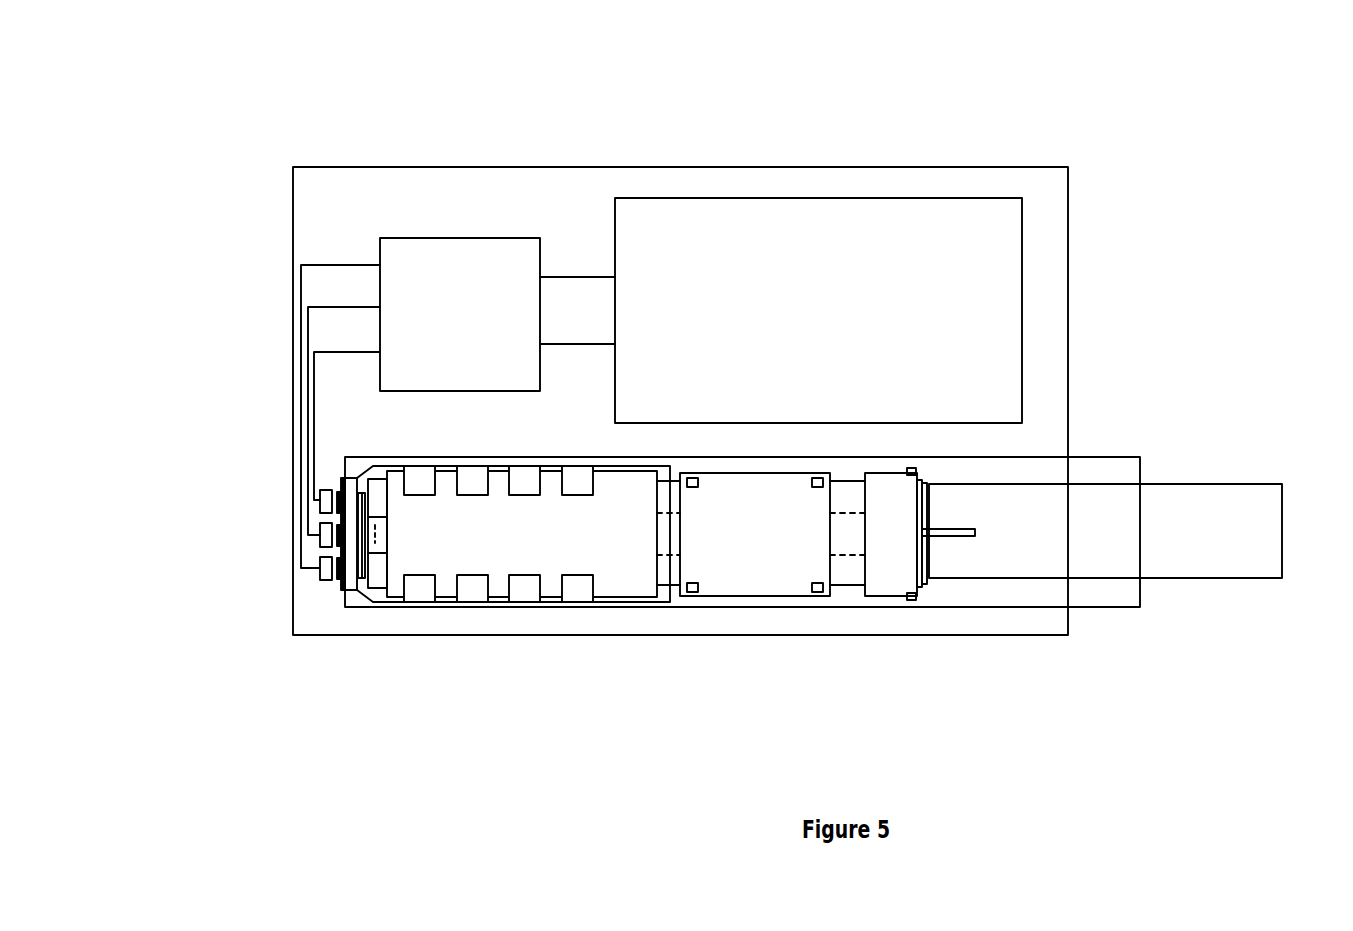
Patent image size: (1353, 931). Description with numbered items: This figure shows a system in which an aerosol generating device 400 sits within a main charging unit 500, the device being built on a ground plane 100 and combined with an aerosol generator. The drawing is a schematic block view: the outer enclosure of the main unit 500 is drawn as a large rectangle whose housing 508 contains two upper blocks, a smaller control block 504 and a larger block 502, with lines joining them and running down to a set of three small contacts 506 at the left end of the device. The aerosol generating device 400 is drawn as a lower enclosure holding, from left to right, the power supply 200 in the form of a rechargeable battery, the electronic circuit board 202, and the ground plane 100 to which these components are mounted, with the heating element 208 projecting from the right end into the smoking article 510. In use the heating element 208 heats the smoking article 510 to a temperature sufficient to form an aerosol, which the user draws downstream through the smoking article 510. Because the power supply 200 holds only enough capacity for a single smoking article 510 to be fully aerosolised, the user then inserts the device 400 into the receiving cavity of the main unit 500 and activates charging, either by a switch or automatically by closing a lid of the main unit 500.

The main charging unit 500 is at (899, 151).
The housing 508 is at (305, 227).
The controller 504 is at (468, 260).
The power source 502 is at (1008, 283).
The aerosol generating device 400 is at (1099, 476).
The electrical contacts 506 is at (325, 574).
The power supply 200 is at (630, 583).
The electronic circuit board 202 is at (750, 583).
The ground plane 100 is at (847, 578).
The heating element 208 is at (950, 533).
The smoking article 510 is at (1172, 557).